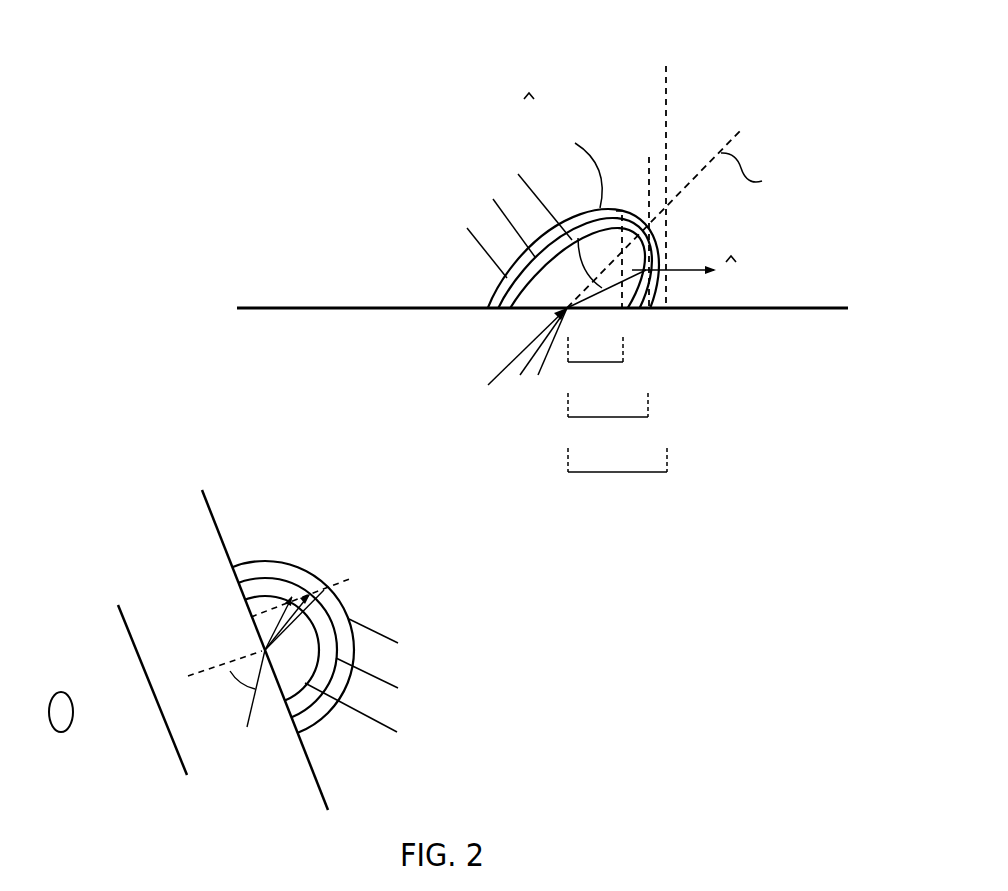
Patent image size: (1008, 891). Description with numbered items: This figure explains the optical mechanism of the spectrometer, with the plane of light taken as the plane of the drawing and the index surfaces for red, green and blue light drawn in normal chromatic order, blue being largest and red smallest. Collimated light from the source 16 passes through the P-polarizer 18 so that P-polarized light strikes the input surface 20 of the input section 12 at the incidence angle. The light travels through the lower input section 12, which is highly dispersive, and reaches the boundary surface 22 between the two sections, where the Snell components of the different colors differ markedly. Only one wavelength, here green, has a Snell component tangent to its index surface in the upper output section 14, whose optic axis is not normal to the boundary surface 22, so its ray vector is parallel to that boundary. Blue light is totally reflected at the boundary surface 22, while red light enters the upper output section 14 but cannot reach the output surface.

The input section 12 is at (369, 540).
The upper output section 14 is at (468, 121).
The source 16 is at (62, 733).
The P-polarizer 18 is at (117, 577).
The input surface 20 is at (311, 769).
The boundary surface 22 is at (419, 311).